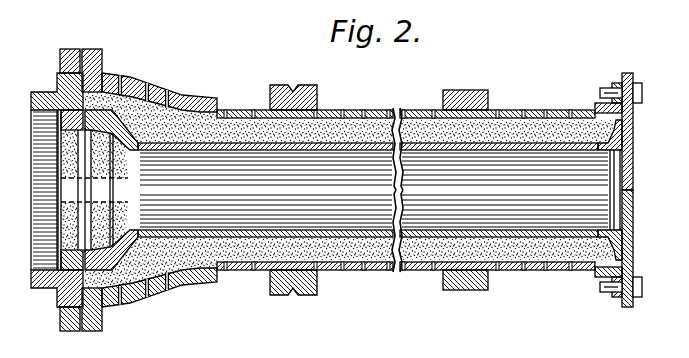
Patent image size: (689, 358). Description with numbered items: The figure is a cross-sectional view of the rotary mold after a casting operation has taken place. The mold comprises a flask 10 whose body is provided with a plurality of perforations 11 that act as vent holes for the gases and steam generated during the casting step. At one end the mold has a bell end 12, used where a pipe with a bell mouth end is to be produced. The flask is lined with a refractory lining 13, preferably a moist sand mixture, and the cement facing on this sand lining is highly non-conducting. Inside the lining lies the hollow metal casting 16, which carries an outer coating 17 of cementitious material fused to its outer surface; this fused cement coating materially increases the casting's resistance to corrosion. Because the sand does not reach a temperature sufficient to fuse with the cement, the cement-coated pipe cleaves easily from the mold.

The flask 10 is at (245, 273).
The perforations 11 is at (338, 273).
The bell end 12 is at (163, 293).
The refractory lining 13 is at (460, 272).
The hollow metal casting 16 is at (530, 226).
The outer coating 17 is at (363, 143).